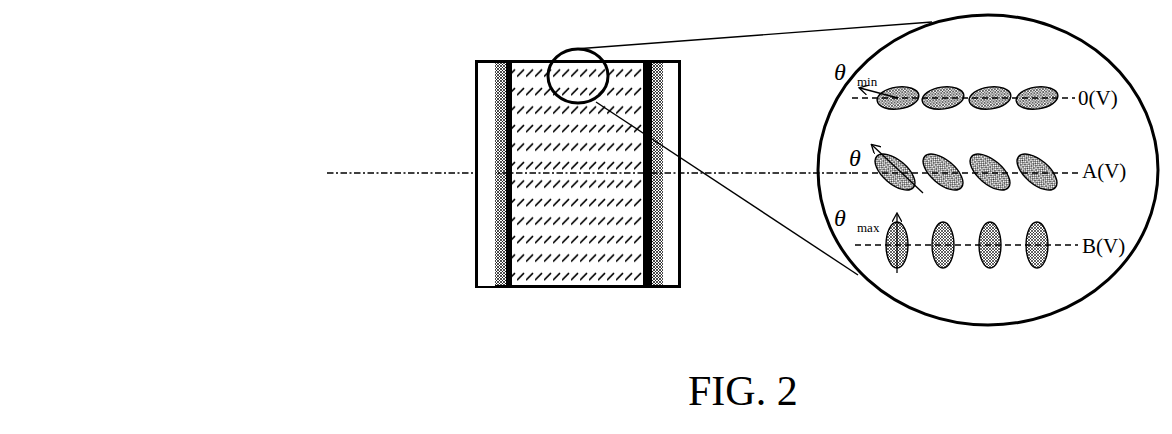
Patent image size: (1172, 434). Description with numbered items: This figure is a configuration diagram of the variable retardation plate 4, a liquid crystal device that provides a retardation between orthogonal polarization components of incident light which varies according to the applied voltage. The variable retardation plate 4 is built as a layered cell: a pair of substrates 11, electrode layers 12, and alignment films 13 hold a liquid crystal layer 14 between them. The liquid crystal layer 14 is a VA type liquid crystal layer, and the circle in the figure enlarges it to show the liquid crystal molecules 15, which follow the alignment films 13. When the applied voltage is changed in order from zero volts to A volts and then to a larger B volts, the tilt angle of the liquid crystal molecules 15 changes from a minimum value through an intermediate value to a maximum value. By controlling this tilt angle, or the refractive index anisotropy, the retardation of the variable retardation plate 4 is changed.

The variable retardation plate 4 is at (473, 118).
The substrate 11 is at (480, 288).
The electrode layer 12 is at (499, 288).
The alignment film 13 is at (510, 288).
The liquid crystal layer 14 is at (556, 270).
The liquid crystal molecule 15 is at (1038, 268).